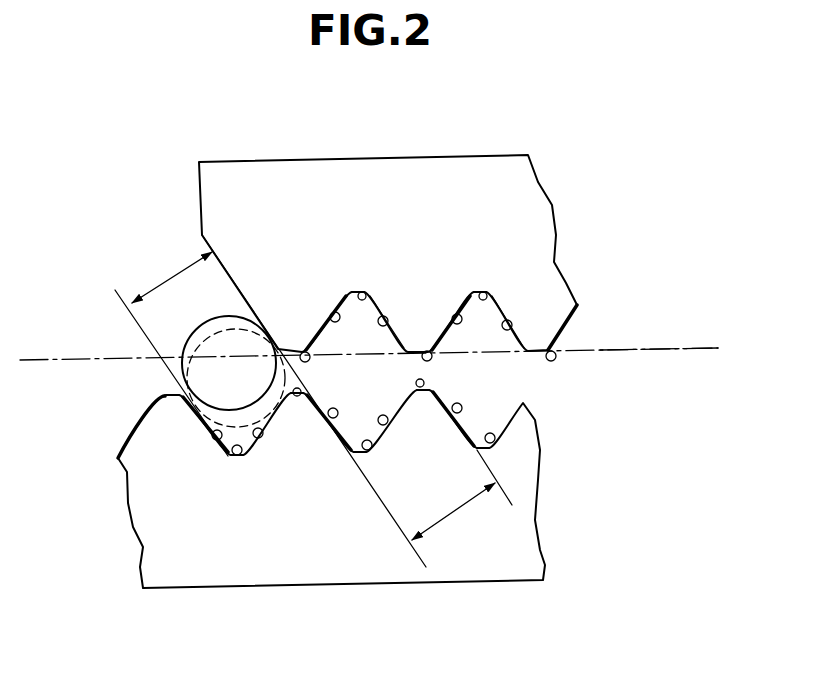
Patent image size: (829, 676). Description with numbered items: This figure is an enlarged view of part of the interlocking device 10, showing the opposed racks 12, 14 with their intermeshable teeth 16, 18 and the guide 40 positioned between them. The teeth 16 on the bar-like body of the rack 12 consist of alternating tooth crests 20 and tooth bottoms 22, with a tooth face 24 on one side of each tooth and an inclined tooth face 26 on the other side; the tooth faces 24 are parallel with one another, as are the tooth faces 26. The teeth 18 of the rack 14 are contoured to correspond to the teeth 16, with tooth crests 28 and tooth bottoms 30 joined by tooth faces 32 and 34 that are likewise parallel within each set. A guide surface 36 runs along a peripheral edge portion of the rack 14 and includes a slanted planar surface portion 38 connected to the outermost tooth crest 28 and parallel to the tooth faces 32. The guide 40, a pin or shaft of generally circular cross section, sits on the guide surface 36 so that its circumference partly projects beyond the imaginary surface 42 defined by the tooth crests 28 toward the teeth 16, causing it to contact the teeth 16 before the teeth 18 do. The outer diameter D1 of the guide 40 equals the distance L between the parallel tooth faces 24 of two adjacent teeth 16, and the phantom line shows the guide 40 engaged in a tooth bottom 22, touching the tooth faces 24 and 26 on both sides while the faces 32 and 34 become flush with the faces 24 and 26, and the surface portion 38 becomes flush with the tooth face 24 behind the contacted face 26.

The interlocking device 10 is at (556, 163).
The rack 12 is at (152, 567).
The rack 14 is at (476, 170).
The teeth 16 is at (548, 410).
The teeth 18 is at (600, 330).
The tooth crests 20 is at (150, 400).
The tooth bottoms 22 is at (243, 470).
The tooth face 24 is at (215, 450).
The tooth face 26 is at (137, 430).
The tooth crests 28 is at (303, 345).
The tooth bottoms 30 is at (358, 290).
The tooth face 32 is at (384, 300).
The tooth face 34 is at (340, 300).
The guide surface 36 is at (227, 272).
The surface portion 38 is at (258, 318).
The guide 40 is at (178, 338).
The imaginary surface 42 is at (700, 348).
The outer diameter D1 is at (170, 280).
The distance L is at (456, 512).